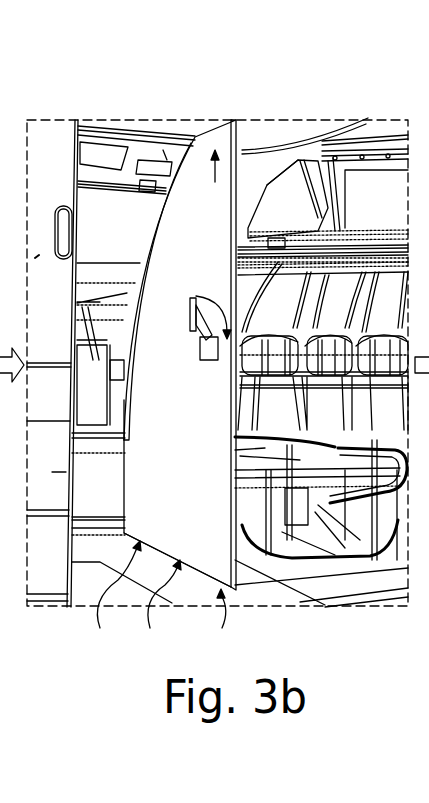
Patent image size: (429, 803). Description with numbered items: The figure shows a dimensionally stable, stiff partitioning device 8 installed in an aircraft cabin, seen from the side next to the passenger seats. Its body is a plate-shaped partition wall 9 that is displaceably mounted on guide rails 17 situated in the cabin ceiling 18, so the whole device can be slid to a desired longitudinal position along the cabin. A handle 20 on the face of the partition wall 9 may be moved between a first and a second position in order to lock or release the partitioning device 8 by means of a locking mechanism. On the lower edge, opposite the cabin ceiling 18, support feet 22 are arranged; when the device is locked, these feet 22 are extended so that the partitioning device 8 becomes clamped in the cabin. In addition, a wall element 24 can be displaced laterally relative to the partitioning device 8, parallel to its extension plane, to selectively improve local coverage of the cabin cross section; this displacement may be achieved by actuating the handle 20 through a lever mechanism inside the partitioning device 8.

The partitioning device 8 is at (213, 552).
The partition wall 9 is at (192, 401).
The guide rails 17 is at (337, 133).
The cabin ceiling 18 is at (290, 137).
The handle 20 is at (201, 293).
The support feet 22 is at (162, 597).
The wall element 24 is at (126, 418).